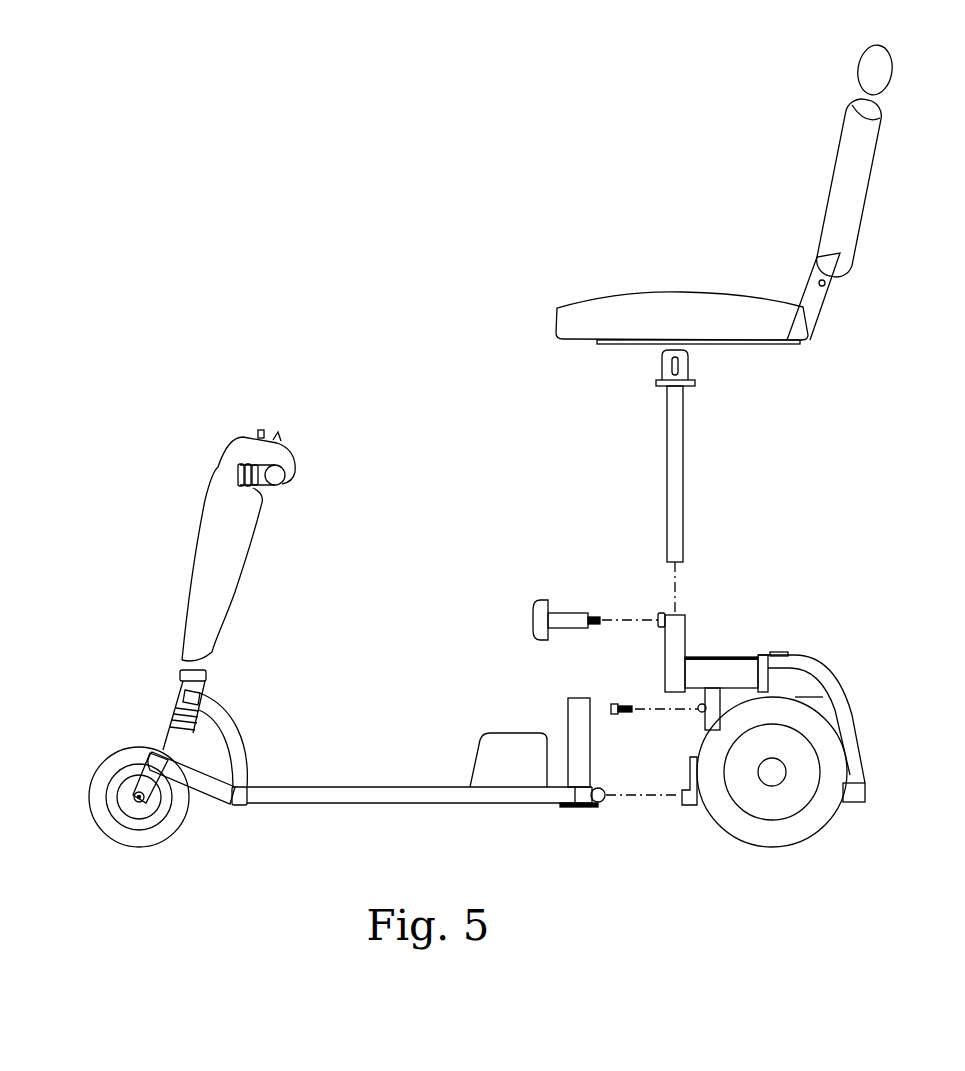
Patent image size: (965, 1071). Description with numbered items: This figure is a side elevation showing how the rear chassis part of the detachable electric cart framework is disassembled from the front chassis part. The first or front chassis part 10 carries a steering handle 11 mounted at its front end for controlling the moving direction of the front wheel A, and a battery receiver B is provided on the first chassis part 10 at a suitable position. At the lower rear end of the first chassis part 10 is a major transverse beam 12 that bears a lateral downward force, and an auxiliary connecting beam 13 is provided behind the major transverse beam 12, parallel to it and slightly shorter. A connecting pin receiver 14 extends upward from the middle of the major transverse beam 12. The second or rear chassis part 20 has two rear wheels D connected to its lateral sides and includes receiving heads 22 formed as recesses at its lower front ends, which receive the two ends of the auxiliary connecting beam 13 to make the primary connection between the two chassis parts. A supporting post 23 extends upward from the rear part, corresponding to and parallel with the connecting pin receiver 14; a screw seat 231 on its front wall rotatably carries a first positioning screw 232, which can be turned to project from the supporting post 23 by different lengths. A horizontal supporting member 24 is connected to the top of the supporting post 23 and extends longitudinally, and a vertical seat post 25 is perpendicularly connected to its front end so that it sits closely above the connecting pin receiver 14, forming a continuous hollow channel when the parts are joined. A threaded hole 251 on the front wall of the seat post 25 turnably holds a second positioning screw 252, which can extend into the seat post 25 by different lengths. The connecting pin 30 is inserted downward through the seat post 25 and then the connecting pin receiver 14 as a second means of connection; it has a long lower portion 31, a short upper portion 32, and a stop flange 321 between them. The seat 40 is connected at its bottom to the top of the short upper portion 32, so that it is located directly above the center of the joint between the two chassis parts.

The first or front chassis part 10 is at (352, 795).
The steering handle 11 is at (218, 530).
The major transverse beam 12 is at (557, 803).
The auxiliary connecting beam 13 is at (607, 797).
The connecting pin receiver 14 is at (578, 733).
The second or rear chassis part 20 is at (853, 797).
The receiving heads 22 is at (682, 773).
The supporting post 23 is at (760, 655).
The horizontal supporting member 24 is at (694, 660).
The vertical seat post 25 is at (673, 656).
The connecting pin 30 is at (669, 456).
The long lower portion 31 is at (672, 493).
The short upper portion 32 is at (683, 363).
The seat 40 is at (622, 308).
The screw seat 231 is at (713, 697).
The first positioning screw 232 is at (620, 716).
The threaded hole 251 is at (658, 617).
The second positioning screw 252 is at (560, 618).
The stop flange 321 is at (658, 383).
The front wheel A is at (118, 762).
The battery receiver B is at (487, 752).
The rear wheels D is at (832, 747).